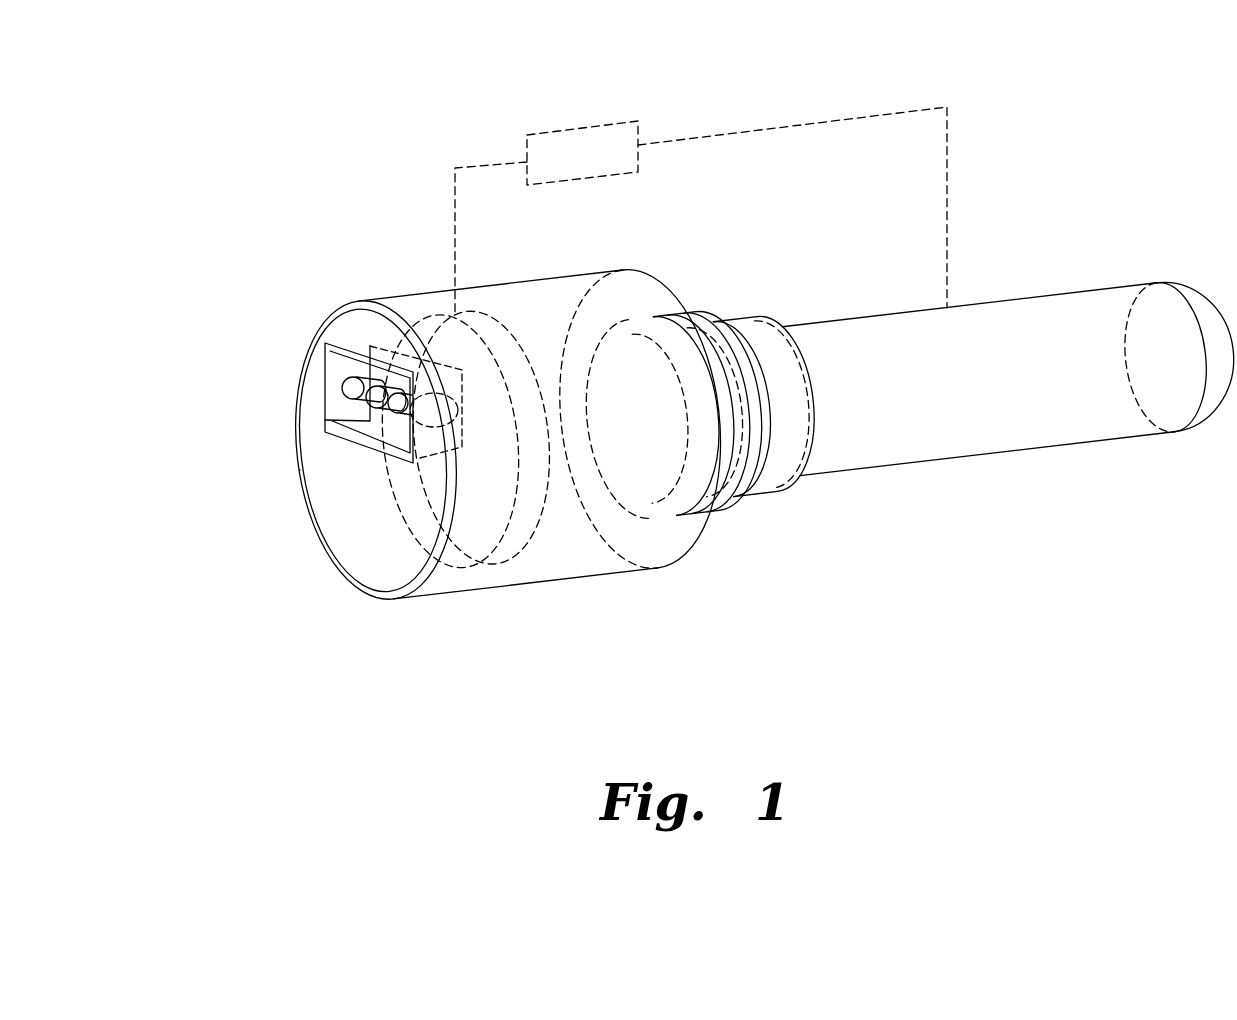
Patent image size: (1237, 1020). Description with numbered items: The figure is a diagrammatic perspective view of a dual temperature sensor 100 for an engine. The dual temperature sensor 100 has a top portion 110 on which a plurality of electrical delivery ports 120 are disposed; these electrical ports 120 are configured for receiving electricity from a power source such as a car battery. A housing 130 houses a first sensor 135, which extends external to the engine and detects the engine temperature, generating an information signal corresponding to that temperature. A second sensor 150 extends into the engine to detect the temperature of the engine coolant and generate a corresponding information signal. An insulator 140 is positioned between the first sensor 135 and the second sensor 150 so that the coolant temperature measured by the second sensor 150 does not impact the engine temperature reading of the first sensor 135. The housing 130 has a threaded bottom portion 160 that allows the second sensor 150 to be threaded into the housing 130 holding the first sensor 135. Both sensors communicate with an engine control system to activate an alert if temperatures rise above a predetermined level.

The dual temperature sensor 100 is at (278, 125).
The top portion 110 is at (358, 522).
The electrical delivery ports 120 is at (308, 373).
The housing 130 is at (537, 272).
The first sensor 135 is at (452, 567).
The insulator 140 is at (773, 338).
The second sensor 150 is at (1000, 297).
The threaded bottom portion 160 is at (690, 310).